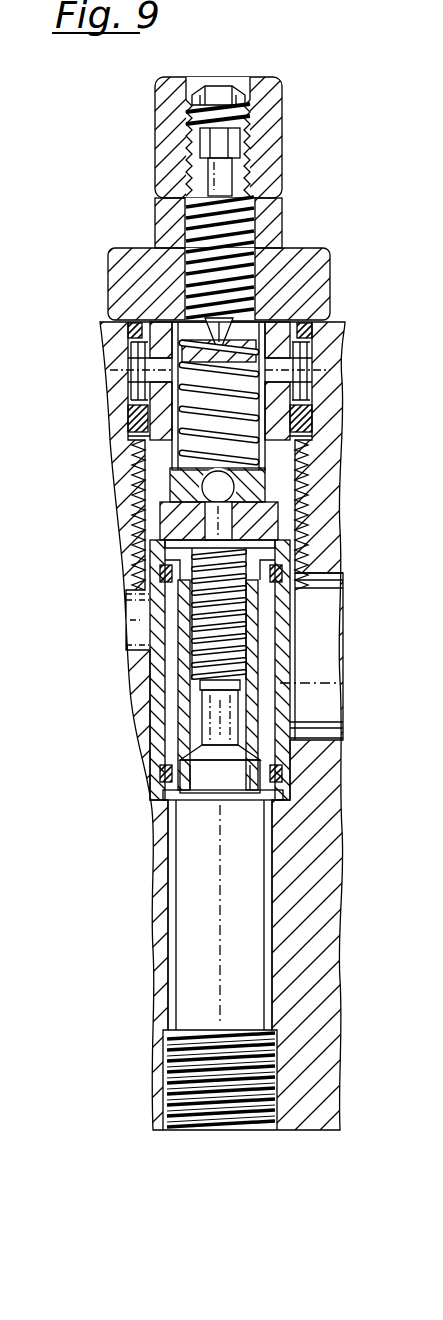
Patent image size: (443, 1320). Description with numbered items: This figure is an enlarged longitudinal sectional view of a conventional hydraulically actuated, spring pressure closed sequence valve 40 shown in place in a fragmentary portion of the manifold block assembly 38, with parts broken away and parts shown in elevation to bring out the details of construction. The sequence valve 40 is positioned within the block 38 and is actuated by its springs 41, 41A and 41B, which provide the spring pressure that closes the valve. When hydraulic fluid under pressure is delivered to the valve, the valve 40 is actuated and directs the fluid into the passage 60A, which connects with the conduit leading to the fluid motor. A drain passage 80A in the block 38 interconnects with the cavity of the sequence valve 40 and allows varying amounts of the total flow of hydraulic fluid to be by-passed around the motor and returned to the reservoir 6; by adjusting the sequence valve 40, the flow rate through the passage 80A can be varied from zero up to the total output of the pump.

The manifold block assembly 38 is at (346, 900).
The sequence valve 40 is at (330, 284).
The drain passage 80A is at (103, 382).
The spring 41 is at (185, 442).
The spring 41A is at (203, 542).
The spring 41B is at (200, 673).
The passage 60A is at (343, 705).
The reservoir 6 is at (218, 1123).